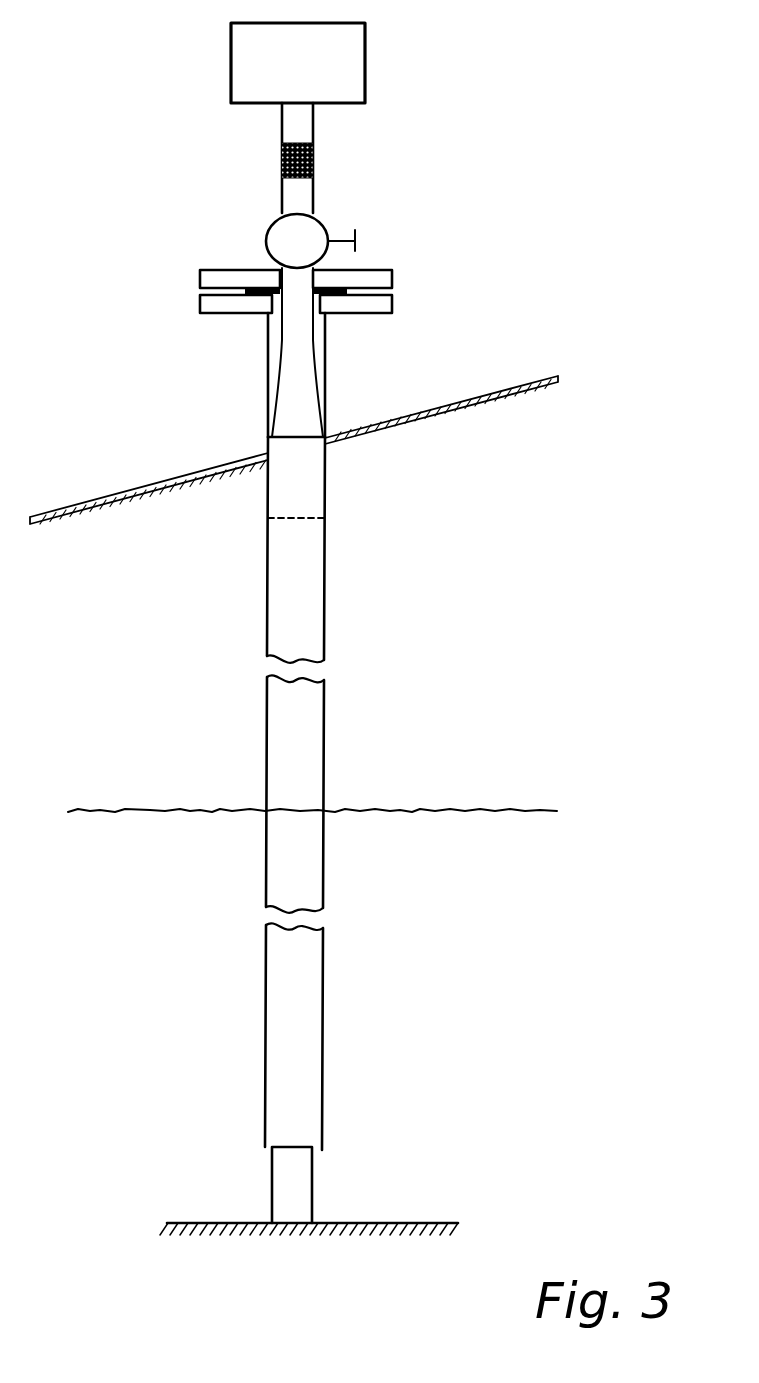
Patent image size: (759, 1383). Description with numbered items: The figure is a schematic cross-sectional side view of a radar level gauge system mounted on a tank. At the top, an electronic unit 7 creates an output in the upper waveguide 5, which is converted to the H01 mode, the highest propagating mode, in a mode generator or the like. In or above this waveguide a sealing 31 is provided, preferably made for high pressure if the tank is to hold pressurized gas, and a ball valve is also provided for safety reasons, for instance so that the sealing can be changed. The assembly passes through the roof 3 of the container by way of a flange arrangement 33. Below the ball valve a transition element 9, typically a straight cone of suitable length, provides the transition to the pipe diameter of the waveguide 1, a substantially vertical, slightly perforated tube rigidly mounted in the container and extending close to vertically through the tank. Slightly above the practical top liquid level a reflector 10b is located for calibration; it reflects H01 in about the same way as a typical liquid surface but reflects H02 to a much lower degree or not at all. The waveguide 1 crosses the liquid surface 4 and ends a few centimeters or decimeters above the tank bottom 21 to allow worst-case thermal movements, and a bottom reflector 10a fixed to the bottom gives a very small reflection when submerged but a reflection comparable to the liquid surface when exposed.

The waveguide 1 is at (325, 595).
The roof of the container 3 is at (557, 376).
The water surface 4 is at (484, 808).
The waveguide 5 is at (289, 120).
The electronic unit 7 is at (350, 58).
The transition element 9 is at (297, 395).
The bottom reflector 10a is at (305, 1185).
The reflector 10b is at (300, 518).
The tank bottom 21 is at (430, 1222).
The sealing 31 is at (316, 155).
The flange assembly 33 is at (392, 280).